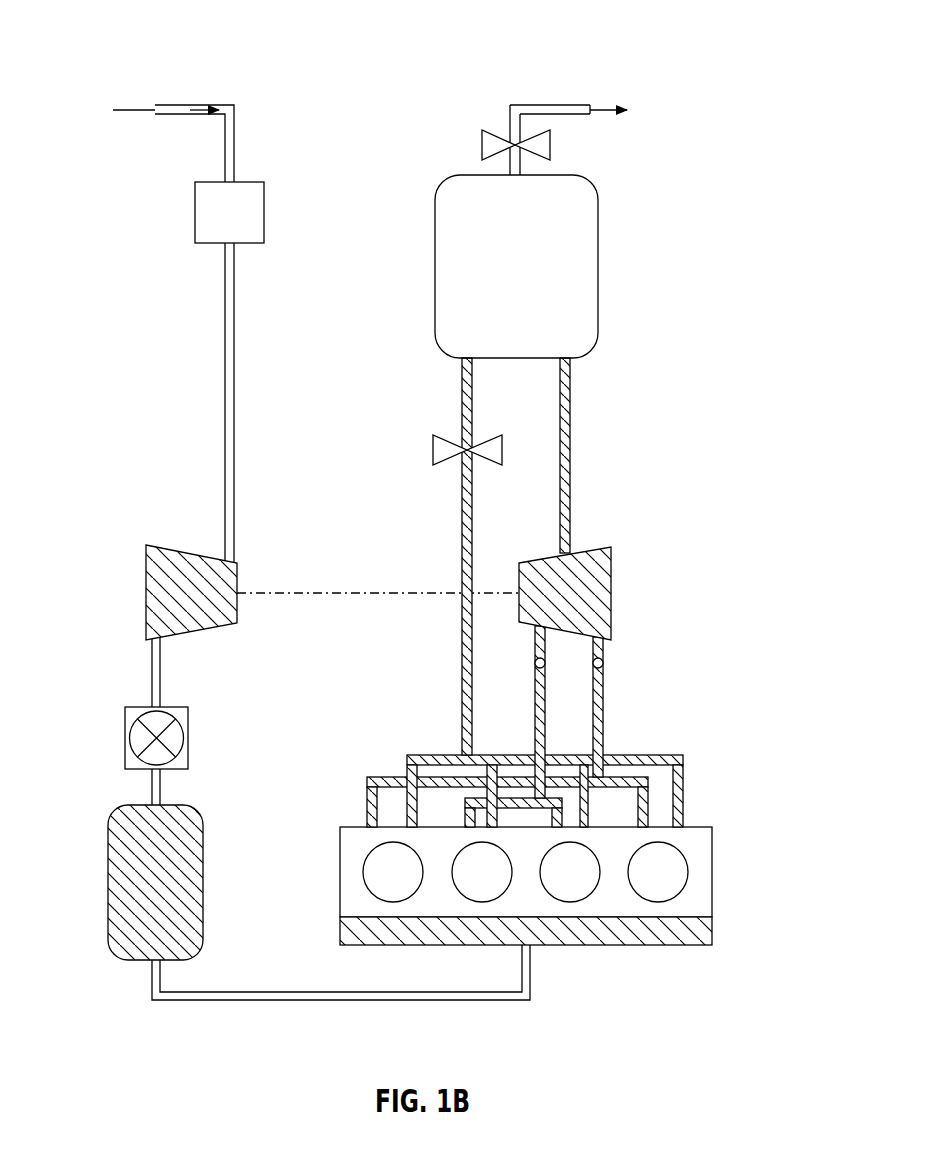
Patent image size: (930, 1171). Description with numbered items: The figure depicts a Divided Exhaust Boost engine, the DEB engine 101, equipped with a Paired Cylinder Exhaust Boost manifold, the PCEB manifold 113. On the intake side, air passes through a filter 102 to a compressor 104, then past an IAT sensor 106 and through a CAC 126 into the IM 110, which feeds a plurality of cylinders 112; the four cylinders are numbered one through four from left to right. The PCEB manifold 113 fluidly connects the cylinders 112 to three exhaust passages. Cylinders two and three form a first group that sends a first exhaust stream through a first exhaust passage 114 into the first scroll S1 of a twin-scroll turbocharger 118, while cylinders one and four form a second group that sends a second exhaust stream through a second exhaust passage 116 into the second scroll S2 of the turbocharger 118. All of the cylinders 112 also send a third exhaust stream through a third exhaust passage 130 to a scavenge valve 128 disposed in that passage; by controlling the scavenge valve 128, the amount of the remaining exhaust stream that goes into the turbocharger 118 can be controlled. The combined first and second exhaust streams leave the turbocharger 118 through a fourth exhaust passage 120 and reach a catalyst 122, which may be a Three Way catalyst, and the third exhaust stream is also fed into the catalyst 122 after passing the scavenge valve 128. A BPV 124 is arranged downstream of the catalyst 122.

The DEB engine 101 is at (721, 41).
The filter 102 is at (195, 213).
The compressor 104 is at (146, 595).
The IAT sensor 106 is at (125, 740).
The IM 110 is at (712, 925).
The plurality of cylinders 112 is at (731, 856).
The Paired Cylinder Exhaust Boost (PCEB) manifold 113 is at (700, 762).
The first exhaust passage 114 is at (535, 712).
The second exhaust passage 116 is at (603, 712).
The twin-scroll turbocharger 118 is at (611, 590).
The fourth exhaust passage 120 is at (570, 440).
The catalyst 122 is at (598, 270).
The BPV 124 is at (482, 146).
The CAC 126 is at (108, 882).
The scavenge valve 128 is at (433, 450).
The third exhaust passage 130 is at (462, 545).
The first scroll S1 is at (534, 664).
The second scroll S2 is at (603, 664).